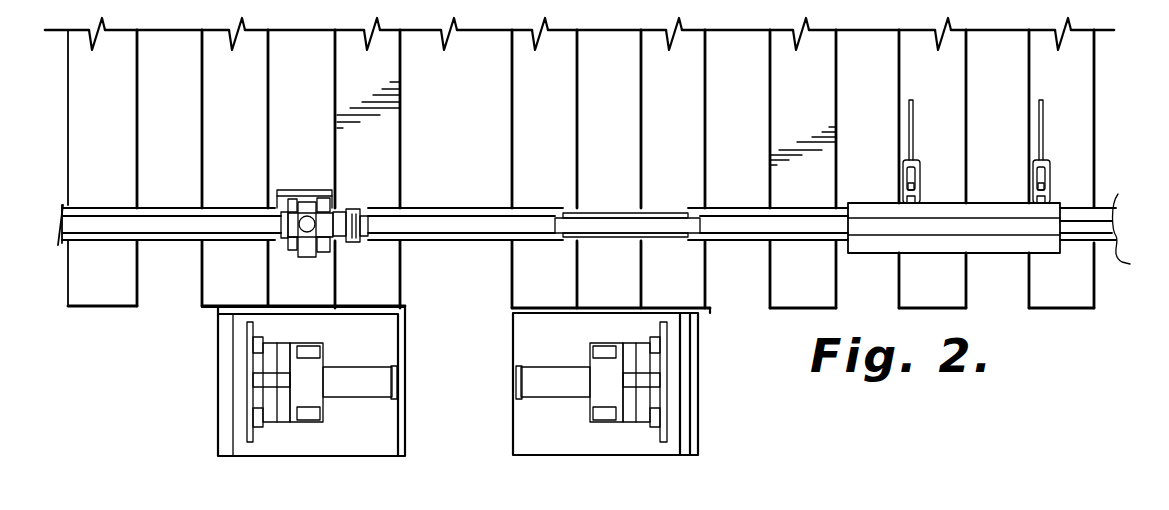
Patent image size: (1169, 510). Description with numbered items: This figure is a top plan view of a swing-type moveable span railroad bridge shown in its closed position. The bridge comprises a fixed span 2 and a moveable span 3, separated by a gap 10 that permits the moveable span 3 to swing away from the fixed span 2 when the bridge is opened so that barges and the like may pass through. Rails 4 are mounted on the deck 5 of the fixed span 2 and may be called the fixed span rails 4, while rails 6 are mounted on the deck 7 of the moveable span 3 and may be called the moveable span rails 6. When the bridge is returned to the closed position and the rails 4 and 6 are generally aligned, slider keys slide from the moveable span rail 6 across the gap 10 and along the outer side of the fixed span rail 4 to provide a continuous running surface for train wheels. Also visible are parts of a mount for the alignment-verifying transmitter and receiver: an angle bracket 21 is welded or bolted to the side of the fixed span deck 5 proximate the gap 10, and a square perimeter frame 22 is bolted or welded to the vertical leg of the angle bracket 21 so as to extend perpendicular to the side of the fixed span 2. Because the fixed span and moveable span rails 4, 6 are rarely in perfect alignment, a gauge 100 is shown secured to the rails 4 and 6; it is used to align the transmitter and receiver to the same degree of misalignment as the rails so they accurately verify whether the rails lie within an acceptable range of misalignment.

The fixed span 2 is at (1080, 311).
The moveable span 3 is at (68, 305).
The fixed span rails 4 is at (1130, 237).
The fixed span deck 5 is at (1088, 293).
The moveable span rails 6 is at (63, 247).
The moveable span deck 7 is at (78, 290).
The gap 10 is at (463, 135).
The angle bracket 21 is at (516, 313).
The square perimeter frame 22 is at (675, 385).
The gauge 100 is at (746, 214).